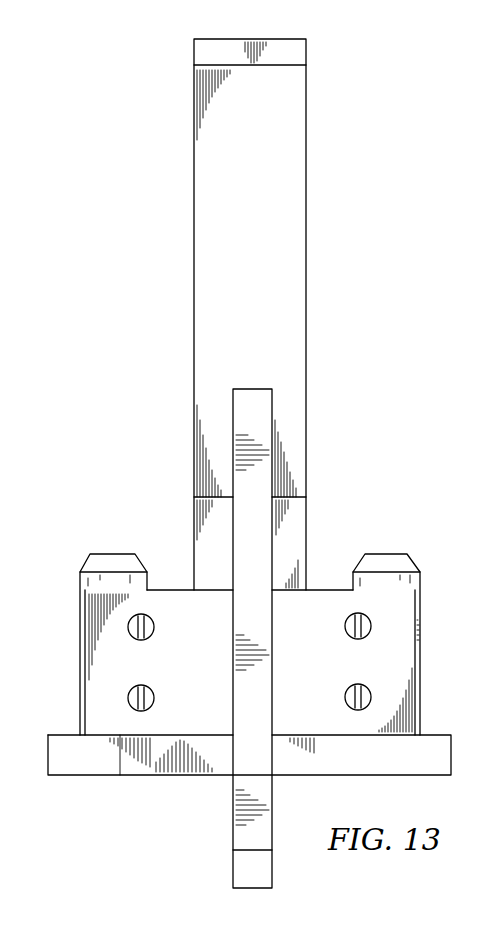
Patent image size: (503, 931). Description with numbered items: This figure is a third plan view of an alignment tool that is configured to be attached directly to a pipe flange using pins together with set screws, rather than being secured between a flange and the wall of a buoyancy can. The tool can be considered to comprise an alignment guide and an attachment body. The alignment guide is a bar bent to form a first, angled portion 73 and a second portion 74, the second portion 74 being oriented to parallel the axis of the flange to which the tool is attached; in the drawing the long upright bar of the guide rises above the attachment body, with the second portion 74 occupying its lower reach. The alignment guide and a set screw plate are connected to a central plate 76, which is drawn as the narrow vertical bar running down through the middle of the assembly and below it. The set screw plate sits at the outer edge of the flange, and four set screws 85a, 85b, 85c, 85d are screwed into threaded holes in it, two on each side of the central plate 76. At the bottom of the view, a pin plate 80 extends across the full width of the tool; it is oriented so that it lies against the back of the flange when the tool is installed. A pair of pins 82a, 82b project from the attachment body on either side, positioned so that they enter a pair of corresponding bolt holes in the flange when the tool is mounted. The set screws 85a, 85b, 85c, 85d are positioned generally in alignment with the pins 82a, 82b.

The first angled portion 73 is at (307, 273).
The second portion 74 is at (307, 528).
The central plate 76 is at (231, 814).
The pin plate 80 is at (97, 776).
The pin 82a is at (85, 565).
The pin 82b is at (418, 565).
The set screw 85a is at (150, 637).
The set screw 85b is at (145, 685).
The set screw 85c is at (356, 638).
The set screw 85d is at (355, 686).